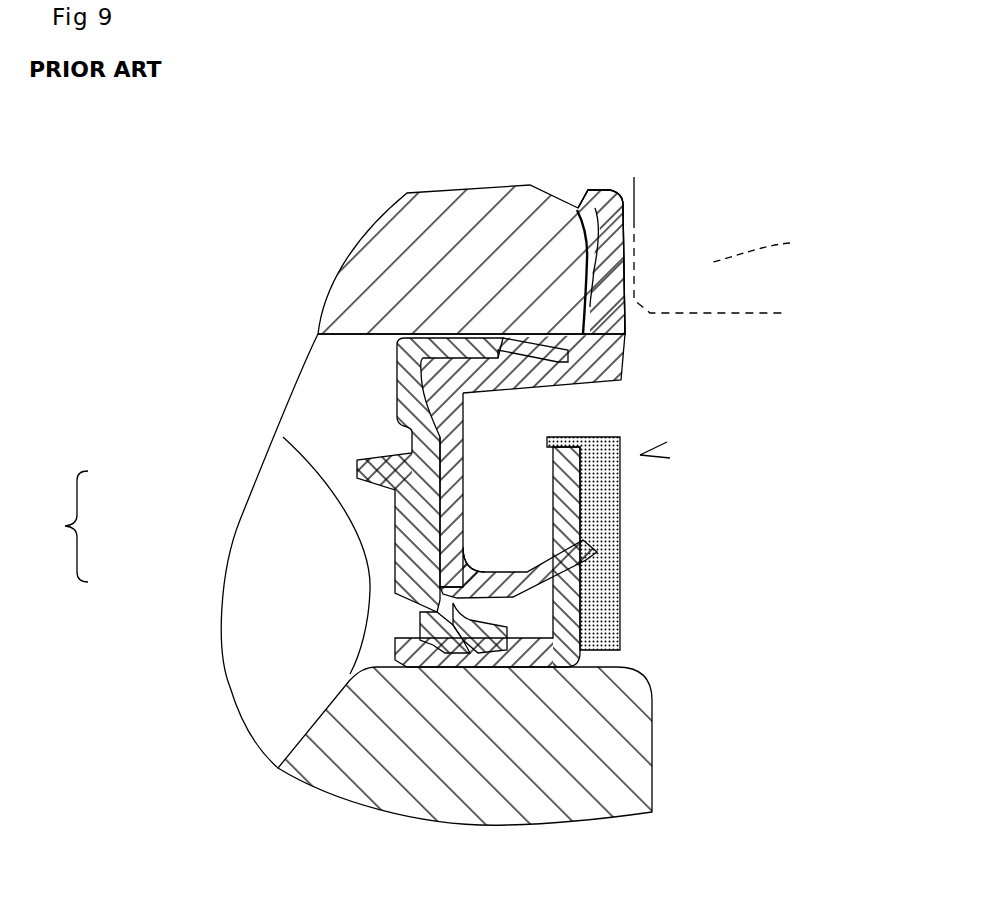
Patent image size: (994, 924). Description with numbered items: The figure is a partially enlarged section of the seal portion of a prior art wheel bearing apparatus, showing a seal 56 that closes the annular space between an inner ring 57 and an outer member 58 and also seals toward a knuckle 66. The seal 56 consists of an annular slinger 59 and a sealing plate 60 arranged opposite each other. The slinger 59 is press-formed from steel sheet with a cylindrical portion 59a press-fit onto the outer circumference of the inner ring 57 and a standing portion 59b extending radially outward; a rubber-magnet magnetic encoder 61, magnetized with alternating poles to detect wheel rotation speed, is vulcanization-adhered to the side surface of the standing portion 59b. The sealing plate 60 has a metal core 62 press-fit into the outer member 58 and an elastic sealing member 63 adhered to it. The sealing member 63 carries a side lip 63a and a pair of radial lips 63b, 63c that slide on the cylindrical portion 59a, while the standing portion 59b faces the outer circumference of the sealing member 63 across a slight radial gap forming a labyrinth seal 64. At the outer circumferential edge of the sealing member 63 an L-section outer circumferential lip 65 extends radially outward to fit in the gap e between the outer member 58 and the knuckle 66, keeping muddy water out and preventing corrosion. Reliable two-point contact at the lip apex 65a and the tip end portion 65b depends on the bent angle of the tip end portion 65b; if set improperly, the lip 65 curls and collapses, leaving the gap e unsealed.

The seal 56 is at (645, 455).
The inner ring 57 is at (588, 745).
The outer member 58 is at (502, 293).
The annular slinger 59 is at (760, 560).
The cylindrical portion 59a is at (618, 667).
The standing portion 59b is at (570, 588).
The sealing plate 60 is at (58, 526).
The magnetic encoder 61 is at (597, 512).
The metal core 62 is at (395, 415).
The sealing member 63 is at (160, 538).
The side lip 63a is at (555, 546).
The radial lip 63b is at (447, 607).
The radial lip 63c is at (455, 648).
The labyrinth seal 64 is at (583, 410).
The outer circumferential lip 65 is at (633, 275).
The lip apex 65a is at (622, 215).
The tip end portion 65b is at (590, 205).
The knuckle 66 is at (767, 246).
The gap e is at (612, 190).